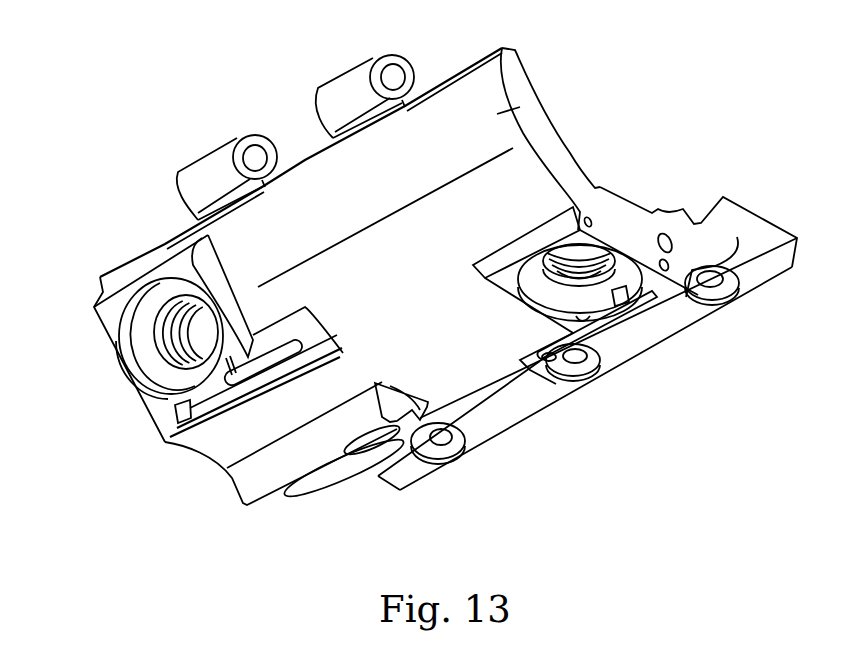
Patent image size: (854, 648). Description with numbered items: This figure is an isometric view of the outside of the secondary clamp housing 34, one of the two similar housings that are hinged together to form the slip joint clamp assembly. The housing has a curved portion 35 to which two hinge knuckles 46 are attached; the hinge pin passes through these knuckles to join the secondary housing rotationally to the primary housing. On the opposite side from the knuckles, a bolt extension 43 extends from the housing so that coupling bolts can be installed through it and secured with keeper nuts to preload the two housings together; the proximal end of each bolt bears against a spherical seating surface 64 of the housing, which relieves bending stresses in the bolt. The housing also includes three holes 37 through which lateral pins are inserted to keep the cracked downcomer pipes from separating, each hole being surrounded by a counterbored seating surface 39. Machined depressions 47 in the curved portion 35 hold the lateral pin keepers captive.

The secondary clamp housing 34 is at (497, 114).
The curved portion 35 is at (530, 173).
The holes 37 is at (197, 327).
The counterbored seating surfaces 39 is at (140, 328).
The bolt extension 43 is at (410, 472).
The hinge knuckles 46 is at (213, 160).
The machined depressions 47 is at (178, 412).
The spherical seating surface 64 is at (452, 452).